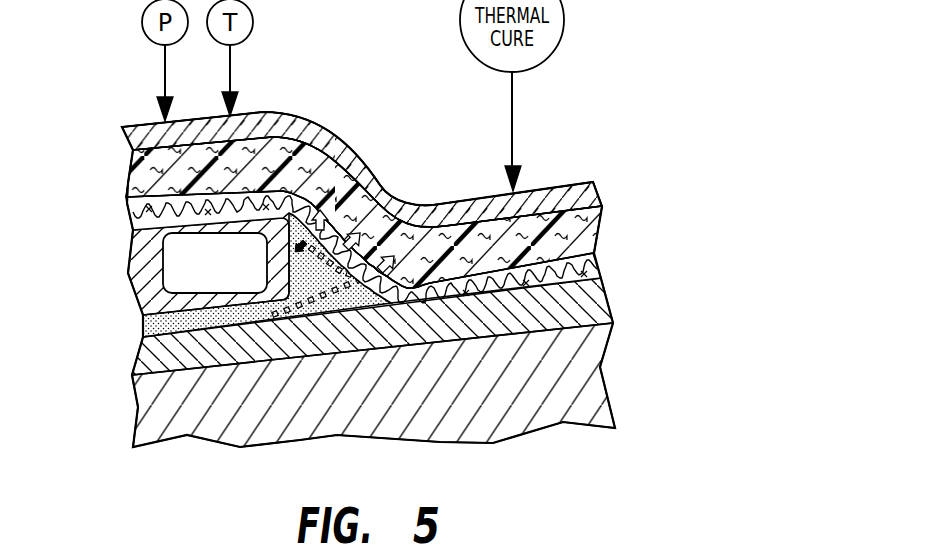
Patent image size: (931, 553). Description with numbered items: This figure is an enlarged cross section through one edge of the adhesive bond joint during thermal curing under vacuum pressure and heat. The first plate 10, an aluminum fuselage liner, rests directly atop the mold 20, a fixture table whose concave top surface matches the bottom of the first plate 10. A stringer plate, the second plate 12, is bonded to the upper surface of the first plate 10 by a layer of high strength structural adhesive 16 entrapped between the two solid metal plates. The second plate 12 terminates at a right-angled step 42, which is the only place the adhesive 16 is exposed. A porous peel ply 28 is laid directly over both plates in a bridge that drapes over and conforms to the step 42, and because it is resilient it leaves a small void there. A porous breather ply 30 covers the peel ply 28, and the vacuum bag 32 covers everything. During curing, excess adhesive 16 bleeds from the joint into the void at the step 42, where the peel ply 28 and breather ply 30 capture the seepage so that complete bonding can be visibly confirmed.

The first metal part 10 is at (133, 358).
The second metal part 12 is at (130, 257).
The structural adhesive 16 is at (143, 328).
The mold 20 is at (138, 408).
The porous peel ply 28 is at (128, 218).
The porous breather ply 30 is at (127, 183).
The vacuum bag 32 is at (122, 135).
The right-angled step 42 is at (352, 175).